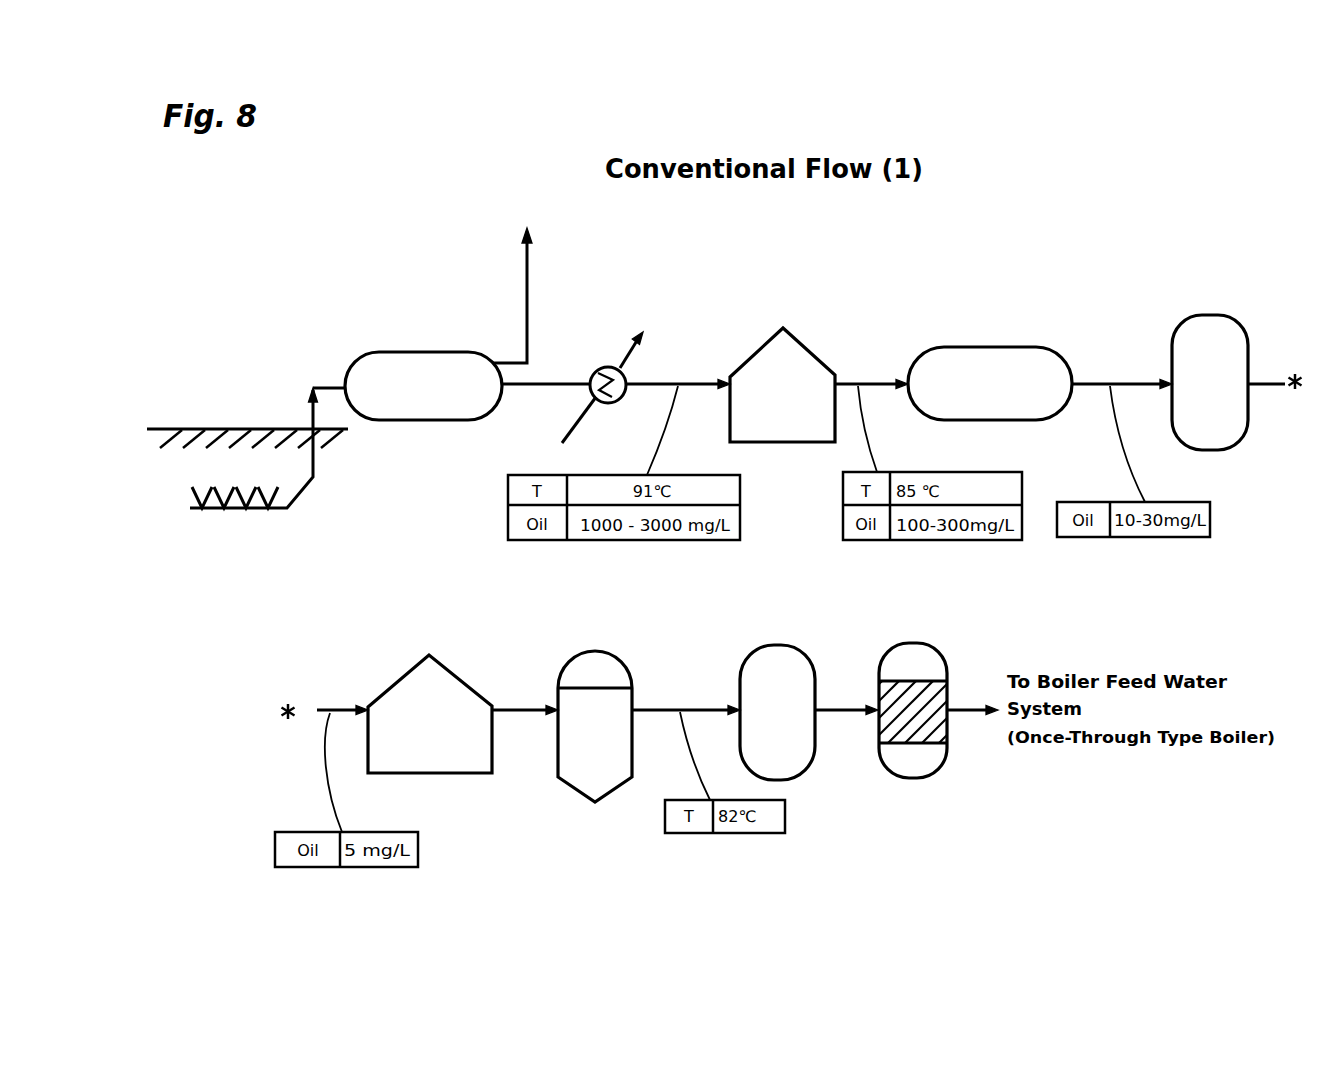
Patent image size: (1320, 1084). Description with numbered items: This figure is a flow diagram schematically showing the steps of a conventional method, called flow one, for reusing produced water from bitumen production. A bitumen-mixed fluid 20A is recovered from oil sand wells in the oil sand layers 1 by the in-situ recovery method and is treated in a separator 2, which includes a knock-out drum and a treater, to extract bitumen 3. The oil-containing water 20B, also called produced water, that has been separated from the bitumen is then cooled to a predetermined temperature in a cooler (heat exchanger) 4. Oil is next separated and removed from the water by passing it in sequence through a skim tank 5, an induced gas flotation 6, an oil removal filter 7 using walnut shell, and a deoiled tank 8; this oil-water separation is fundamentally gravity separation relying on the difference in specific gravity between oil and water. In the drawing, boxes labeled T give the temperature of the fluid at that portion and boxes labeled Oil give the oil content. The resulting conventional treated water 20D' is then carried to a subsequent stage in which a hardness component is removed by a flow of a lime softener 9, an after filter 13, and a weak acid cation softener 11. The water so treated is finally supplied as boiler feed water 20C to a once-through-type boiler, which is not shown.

The oil sand layers 1 is at (255, 477).
The separator 2 is at (388, 373).
The bitumen 3 is at (513, 284).
The cooler (heat exchanger) 4 is at (607, 375).
The skim tank 5 is at (782, 357).
The induced gas flotation 6 is at (955, 372).
The oil removal filter 7 is at (1190, 335).
The deoiled tank 8 is at (397, 705).
The lime softener 9 is at (593, 662).
The after filter 13 is at (773, 662).
The weak acid cation softener 11 is at (910, 650).
The bitumen-mixed fluid 20A is at (323, 378).
The oil-containing water 20B is at (553, 378).
The boiler feed water 20C is at (968, 702).
The conventional treated water 20D' is at (1272, 437).